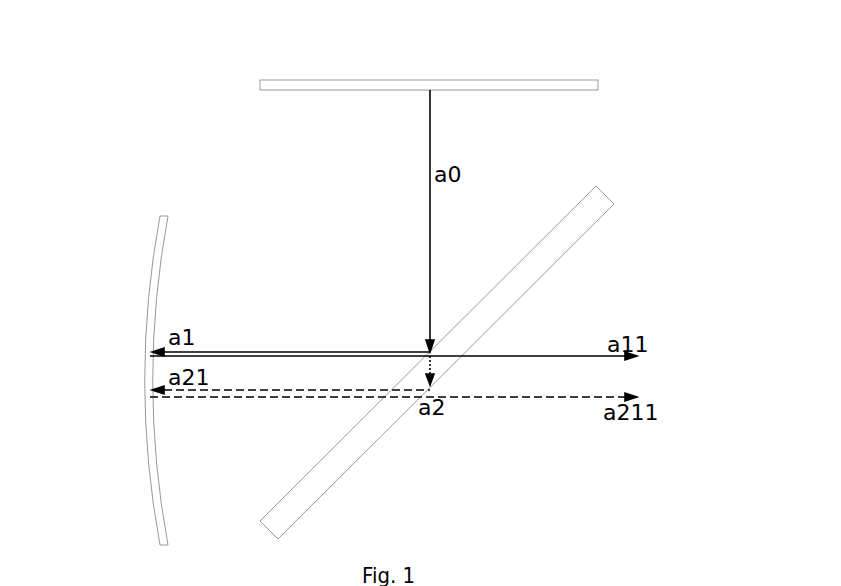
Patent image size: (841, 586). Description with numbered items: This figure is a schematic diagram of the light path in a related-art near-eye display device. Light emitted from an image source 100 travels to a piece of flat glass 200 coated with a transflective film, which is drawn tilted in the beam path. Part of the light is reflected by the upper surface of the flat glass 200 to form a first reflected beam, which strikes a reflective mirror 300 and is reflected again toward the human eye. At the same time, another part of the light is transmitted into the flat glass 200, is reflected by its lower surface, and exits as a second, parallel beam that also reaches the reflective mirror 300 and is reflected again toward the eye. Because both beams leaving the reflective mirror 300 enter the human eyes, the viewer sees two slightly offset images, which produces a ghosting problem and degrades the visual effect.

The image source 100 is at (430, 80).
The flat glass 200 is at (605, 195).
The reflective mirror 300 is at (150, 280).